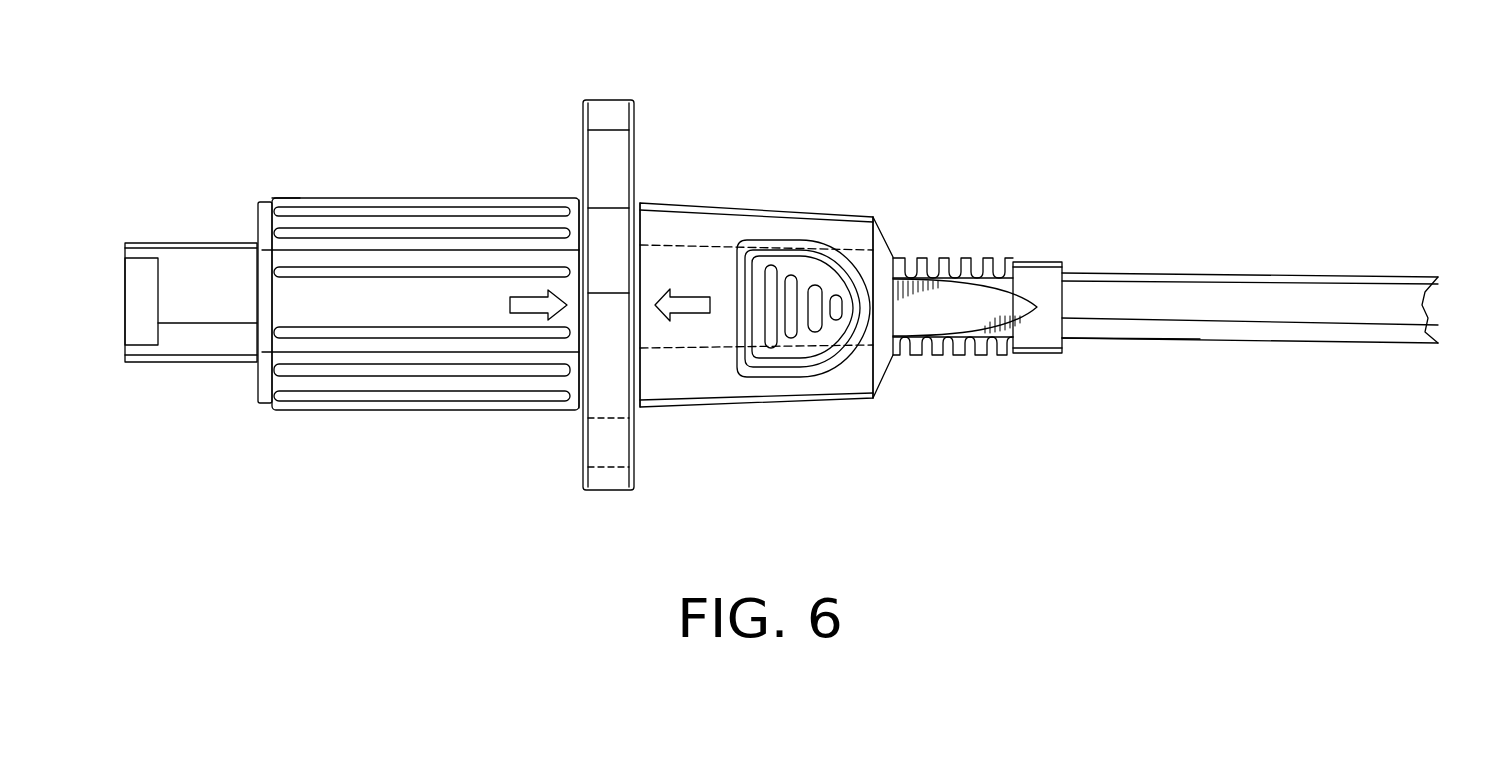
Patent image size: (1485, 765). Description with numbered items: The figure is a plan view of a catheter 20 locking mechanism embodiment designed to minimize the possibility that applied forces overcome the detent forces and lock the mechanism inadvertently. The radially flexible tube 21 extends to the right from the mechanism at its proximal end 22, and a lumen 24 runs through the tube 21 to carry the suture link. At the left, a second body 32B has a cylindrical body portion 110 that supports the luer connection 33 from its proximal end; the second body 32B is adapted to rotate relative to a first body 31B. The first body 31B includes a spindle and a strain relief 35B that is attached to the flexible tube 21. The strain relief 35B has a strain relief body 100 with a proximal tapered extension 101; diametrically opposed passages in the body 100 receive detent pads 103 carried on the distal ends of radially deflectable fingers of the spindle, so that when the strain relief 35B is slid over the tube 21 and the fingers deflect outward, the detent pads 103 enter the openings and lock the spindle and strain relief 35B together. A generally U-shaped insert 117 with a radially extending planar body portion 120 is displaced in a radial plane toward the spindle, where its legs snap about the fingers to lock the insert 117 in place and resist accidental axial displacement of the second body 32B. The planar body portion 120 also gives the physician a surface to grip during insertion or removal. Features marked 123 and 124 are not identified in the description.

The catheter 20 is at (1213, 190).
The flexible tube 21 is at (1198, 339).
The proximal end 22 is at (947, 428).
The lumen 24 is at (1343, 307).
The first body 31B is at (853, 213).
The second body 32B is at (305, 197).
The luer connection 33 is at (192, 243).
The strain relief 35B is at (885, 252).
The strain relief body 100 is at (753, 405).
The proximal tapered extension 101 is at (980, 258).
The detent pads 103 is at (805, 272).
The body portion 110 is at (367, 208).
The insert 117 is at (623, 437).
The planar body portion 120 is at (608, 103).
The panel aperture edge 123 is at (581, 205).
The housing front face 124 is at (638, 200).